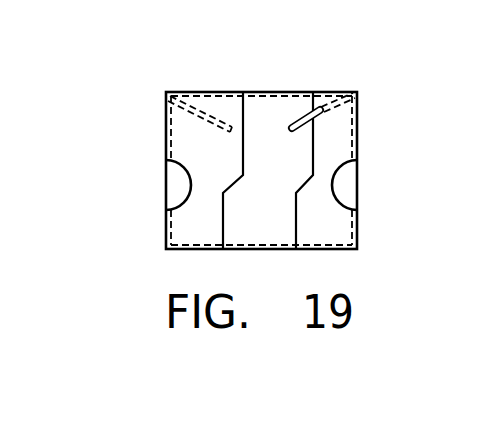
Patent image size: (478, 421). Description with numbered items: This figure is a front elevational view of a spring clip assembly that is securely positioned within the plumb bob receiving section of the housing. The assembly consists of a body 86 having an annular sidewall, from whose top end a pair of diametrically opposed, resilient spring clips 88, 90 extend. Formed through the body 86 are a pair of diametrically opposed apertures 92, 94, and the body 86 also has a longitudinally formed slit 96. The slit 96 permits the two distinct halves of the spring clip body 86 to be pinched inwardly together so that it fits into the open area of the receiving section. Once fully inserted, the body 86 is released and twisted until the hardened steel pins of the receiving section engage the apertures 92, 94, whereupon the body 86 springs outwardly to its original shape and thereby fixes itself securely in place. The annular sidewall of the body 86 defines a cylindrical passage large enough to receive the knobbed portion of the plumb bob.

The body 86 is at (357, 118).
The resilient spring clip 88 is at (200, 110).
The resilient spring clip 90 is at (325, 104).
The aperture 92 is at (184, 186).
The aperture 94 is at (350, 183).
The slit 96 is at (265, 112).